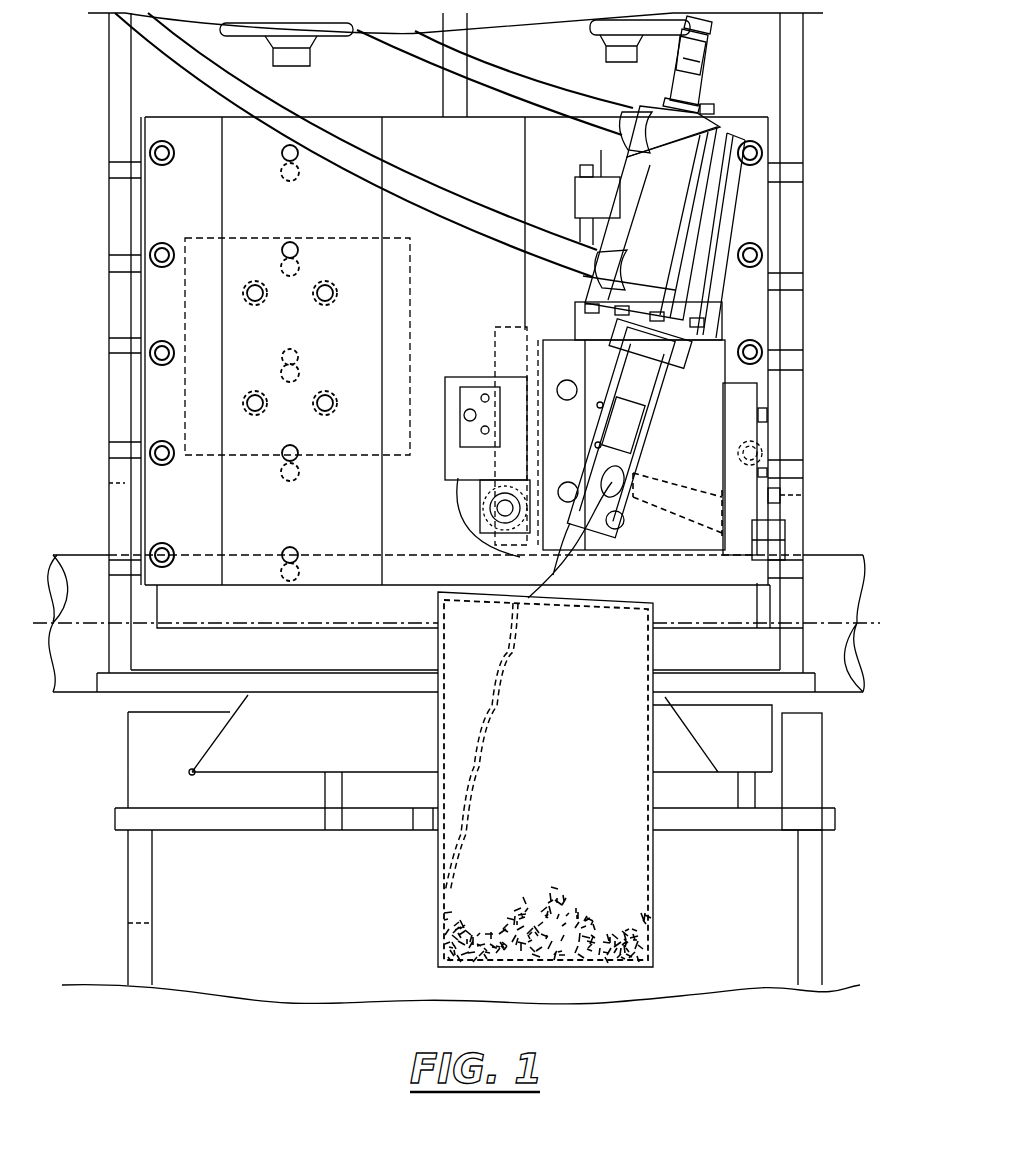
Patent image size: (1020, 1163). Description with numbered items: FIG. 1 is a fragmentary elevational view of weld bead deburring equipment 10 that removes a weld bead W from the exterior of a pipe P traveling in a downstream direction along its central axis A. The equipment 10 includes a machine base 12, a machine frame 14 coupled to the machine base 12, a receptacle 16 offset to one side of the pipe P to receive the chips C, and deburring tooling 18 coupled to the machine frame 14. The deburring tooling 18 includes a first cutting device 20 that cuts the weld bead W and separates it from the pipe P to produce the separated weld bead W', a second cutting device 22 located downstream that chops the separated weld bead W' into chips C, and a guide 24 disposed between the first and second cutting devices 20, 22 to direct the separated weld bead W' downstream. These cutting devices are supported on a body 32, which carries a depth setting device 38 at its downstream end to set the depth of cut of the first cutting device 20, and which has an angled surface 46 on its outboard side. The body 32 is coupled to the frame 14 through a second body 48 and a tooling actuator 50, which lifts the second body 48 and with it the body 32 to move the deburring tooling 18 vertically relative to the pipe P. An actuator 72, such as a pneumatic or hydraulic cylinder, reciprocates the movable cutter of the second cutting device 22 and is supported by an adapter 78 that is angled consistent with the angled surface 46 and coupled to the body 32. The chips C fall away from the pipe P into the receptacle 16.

The weld bead deburring equipment 10 is at (170, 1020).
The machine base 12 is at (125, 888).
The machine frame 14 is at (824, 237).
The receptacle 16 is at (430, 890).
The deburring tooling 18 is at (748, 378).
The first cutting device 20 is at (796, 527).
The second cutting device 22 is at (562, 426).
The guide 24 is at (702, 549).
The body 32 is at (757, 352).
The depth setting device 38 is at (442, 478).
The angled surface 46 is at (722, 345).
The second body 48 is at (690, 352).
The tooling actuator 50 is at (586, 155).
The actuator 72 is at (714, 104).
The adapter 78 is at (728, 206).
The weld bead W is at (465, 602).
The separated weld bead W' is at (677, 491).
The central axis A is at (877, 624).
The pipe P is at (833, 686).
The chips C is at (618, 900).